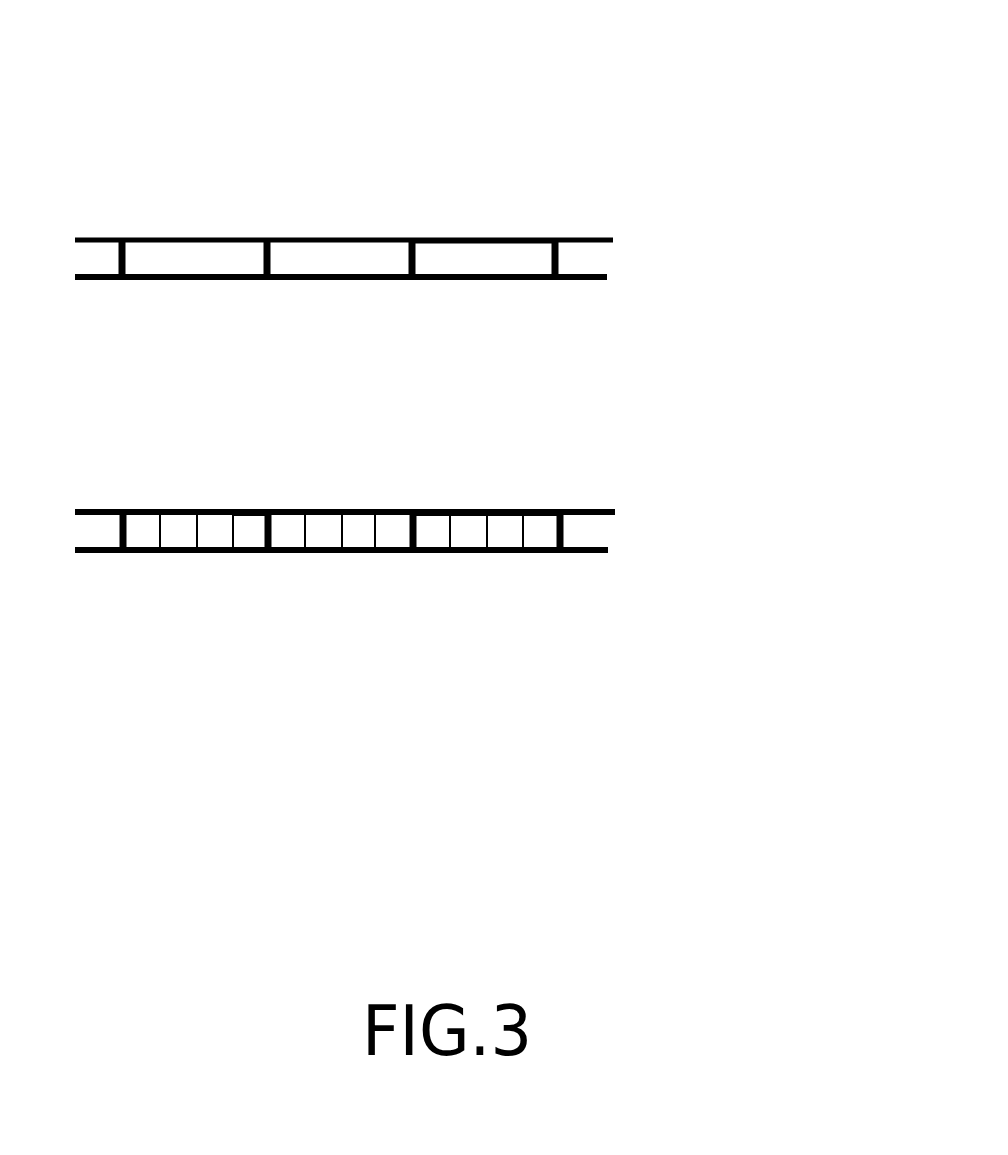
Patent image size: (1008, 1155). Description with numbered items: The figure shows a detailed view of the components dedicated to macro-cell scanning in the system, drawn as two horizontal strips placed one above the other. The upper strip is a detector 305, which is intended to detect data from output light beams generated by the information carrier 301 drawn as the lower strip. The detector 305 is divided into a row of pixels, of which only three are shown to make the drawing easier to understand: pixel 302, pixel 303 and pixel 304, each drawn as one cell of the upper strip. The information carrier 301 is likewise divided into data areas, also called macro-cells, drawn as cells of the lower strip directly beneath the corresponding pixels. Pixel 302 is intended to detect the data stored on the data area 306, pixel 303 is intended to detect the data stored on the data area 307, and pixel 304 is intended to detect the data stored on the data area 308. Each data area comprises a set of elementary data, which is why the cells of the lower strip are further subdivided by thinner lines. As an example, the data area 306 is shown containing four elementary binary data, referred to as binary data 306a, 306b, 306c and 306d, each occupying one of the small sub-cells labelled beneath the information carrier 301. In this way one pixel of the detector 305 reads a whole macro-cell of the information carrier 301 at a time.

The information carrier 301 is at (464, 609).
The pixel 302 is at (173, 238).
The pixel 303 is at (318, 238).
The pixel 304 is at (462, 238).
The detector 305 is at (467, 154).
The data area 306 is at (206, 609).
The binary data 306a is at (128, 552).
The binary data 306b is at (175, 552).
The binary data 306c is at (218, 552).
The binary data 306d is at (255, 552).
The data area 307 is at (332, 510).
The data area 308 is at (475, 510).